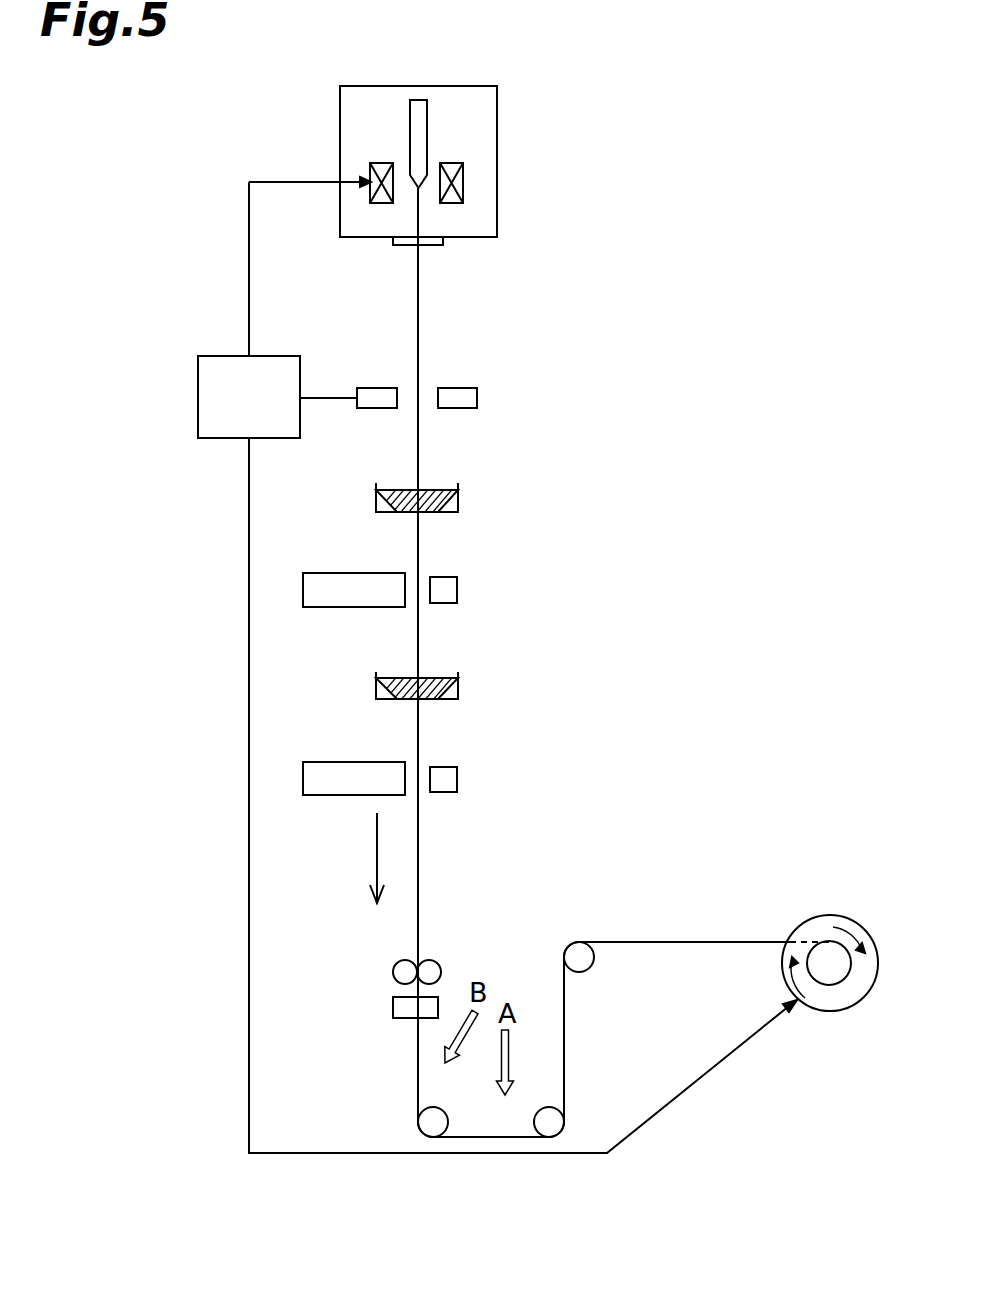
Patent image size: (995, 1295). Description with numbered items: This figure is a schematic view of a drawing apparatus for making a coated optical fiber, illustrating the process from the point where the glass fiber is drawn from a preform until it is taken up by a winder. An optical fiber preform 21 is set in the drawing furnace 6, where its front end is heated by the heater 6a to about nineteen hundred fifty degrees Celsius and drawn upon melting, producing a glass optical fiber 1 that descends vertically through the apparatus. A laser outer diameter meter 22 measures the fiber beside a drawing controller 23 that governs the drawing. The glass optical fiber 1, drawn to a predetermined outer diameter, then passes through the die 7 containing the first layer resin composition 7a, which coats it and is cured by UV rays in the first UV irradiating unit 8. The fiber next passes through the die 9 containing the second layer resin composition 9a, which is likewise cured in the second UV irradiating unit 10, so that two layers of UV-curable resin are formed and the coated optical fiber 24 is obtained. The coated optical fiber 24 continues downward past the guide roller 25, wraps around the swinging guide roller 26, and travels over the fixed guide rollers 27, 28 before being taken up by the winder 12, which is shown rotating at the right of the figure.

The glass optical fiber 1 is at (418, 310).
The drawing furnace 6 is at (480, 197).
The heater 6a is at (382, 203).
The die 7 is at (470, 474).
The first layer resin composition 7a is at (437, 488).
The first UV irradiating unit 8 is at (457, 590).
The die 9 is at (468, 664).
The second layer resin composition 9a is at (437, 677).
The second UV irradiating unit 10 is at (457, 778).
The winder 12 is at (843, 1000).
The optical fiber preform 21 is at (418, 142).
The laser outer diameter meter 22 is at (477, 398).
The drawing controller 23 is at (283, 438).
The coated optical fiber 24 is at (418, 835).
The guide roller 25 is at (378, 957).
The swinging guide roller 26 is at (450, 1127).
The fixed guide roller 27 is at (520, 1127).
The fixed guide roller 28 is at (593, 965).